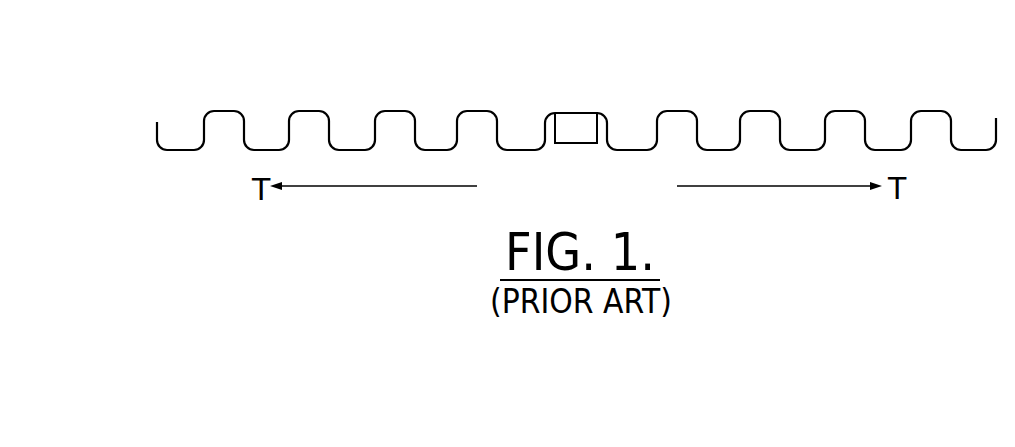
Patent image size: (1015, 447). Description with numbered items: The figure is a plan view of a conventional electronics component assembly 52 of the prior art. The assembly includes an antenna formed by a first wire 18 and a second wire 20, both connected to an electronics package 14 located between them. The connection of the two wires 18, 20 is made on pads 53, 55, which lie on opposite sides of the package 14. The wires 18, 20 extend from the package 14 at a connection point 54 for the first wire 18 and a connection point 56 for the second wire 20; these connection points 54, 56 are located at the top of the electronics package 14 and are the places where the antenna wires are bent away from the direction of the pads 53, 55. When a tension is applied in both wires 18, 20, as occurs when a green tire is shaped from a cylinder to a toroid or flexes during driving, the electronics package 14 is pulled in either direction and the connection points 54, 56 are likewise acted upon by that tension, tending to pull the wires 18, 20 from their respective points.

The conventional electronics component assembly 52 is at (576, 101).
The first wire 18 is at (402, 110).
The second wire 20 is at (750, 110).
The electronics package 14 is at (572, 124).
The pad 53 is at (555, 141).
The connection point 54 is at (555, 114).
The pad 55 is at (597, 143).
The connection point 56 is at (597, 115).